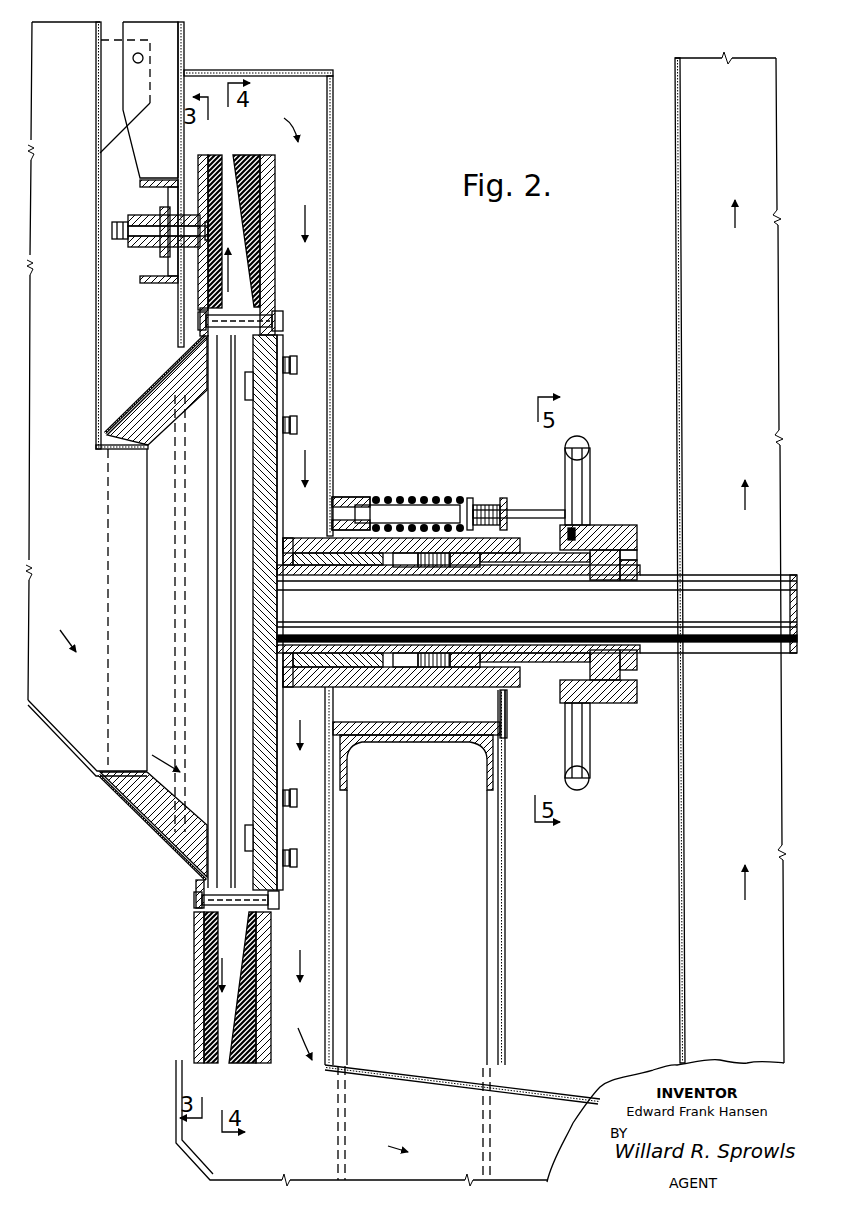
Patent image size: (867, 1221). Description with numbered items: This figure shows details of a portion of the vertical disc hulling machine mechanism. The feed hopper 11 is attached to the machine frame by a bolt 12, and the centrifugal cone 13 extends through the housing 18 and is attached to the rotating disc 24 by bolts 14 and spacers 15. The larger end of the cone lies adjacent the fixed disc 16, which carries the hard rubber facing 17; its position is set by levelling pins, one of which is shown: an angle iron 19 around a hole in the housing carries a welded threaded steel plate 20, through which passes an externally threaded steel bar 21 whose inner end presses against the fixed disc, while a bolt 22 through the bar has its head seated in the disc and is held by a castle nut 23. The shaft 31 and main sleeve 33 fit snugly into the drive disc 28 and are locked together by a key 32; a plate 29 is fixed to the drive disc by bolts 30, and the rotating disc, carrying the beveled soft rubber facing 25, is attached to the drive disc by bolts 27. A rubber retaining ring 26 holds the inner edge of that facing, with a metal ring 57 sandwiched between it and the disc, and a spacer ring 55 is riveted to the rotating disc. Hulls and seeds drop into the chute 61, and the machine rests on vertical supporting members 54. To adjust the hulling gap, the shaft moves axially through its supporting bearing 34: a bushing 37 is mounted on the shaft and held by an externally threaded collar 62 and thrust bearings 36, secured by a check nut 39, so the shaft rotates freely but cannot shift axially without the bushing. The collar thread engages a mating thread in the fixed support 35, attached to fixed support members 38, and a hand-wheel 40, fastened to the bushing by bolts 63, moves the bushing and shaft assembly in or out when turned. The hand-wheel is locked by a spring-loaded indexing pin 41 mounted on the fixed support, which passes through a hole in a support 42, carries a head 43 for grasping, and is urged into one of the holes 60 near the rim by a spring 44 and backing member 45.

The feed hopper 11 is at (61, 736).
The bolt 12 is at (143, 58).
The centrifugal cone 13 is at (141, 803).
The bolts 14 is at (284, 320).
The spacers 15 is at (240, 335).
The fixed disc 16 is at (200, 178).
The hard rubber facing 17 is at (215, 158).
The housing 18 is at (252, 70).
The angle iron 19 is at (150, 283).
The threaded steel plate 20 is at (163, 248).
The externally threaded steel bar 21 is at (140, 247).
The bolt 22 is at (117, 221).
The castle nut 23 is at (137, 222).
The rotating disc 24 is at (277, 178).
The beveled soft rubber facing 25 is at (247, 158).
The rubber retaining ring 26 is at (232, 620).
The bolts 27 is at (298, 366).
The drive disc 28 is at (283, 816).
The plate 29 is at (253, 706).
The bolts 30 is at (298, 420).
The shaft 31 is at (722, 578).
The key 32 is at (350, 640).
The main sleeve 33 is at (573, 577).
The supporting bearing 34 is at (313, 552).
The fixed support 35 is at (505, 700).
The thrust bearings 36 is at (622, 562).
The bushing 37 is at (615, 525).
The fixed support members 38 is at (495, 745).
The check nut 39 is at (638, 658).
The hand-wheel 40 is at (588, 440).
The indexing pin 41 is at (532, 510).
The support 42 is at (503, 497).
The head 43 is at (468, 497).
The spring 44 is at (405, 497).
The backing member 45 is at (345, 497).
The vertical supporting members 54 is at (465, 940).
The spacer ring 55 is at (253, 380).
The metal ring 57 is at (258, 308).
The holes 60 is at (583, 718).
The chute 61 is at (418, 1075).
The externally threaded collar 62 is at (520, 688).
The bolts 63 is at (566, 534).